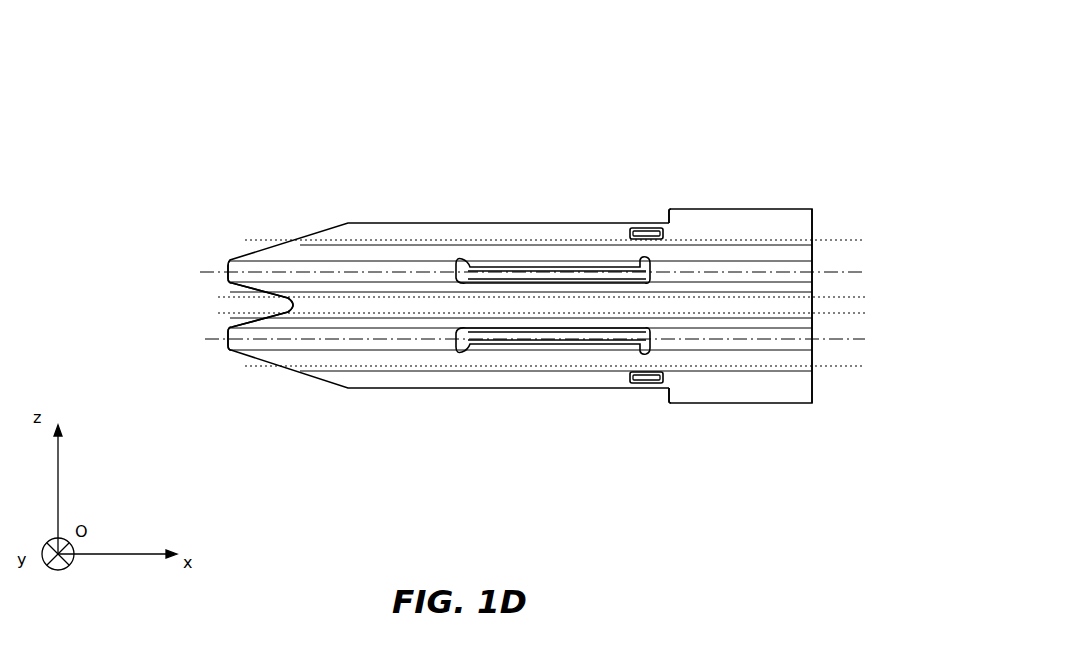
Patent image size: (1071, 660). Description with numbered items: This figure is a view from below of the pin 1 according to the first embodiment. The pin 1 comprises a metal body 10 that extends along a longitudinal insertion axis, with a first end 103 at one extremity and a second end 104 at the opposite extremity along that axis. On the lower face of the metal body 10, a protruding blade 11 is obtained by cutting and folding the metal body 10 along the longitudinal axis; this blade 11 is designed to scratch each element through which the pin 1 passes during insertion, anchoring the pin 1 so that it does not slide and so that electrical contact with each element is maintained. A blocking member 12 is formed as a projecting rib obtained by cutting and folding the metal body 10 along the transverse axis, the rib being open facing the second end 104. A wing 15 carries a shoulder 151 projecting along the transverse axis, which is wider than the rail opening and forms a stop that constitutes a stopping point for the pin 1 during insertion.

The pin 1 is at (244, 140).
The metal body 10 is at (403, 223).
The first end 103 is at (228, 275).
The second end 104 is at (815, 305).
The protruding blade 11 is at (583, 268).
The blocking member 12 is at (652, 227).
The shoulder 151 is at (673, 209).
The wing 15 is at (740, 209).